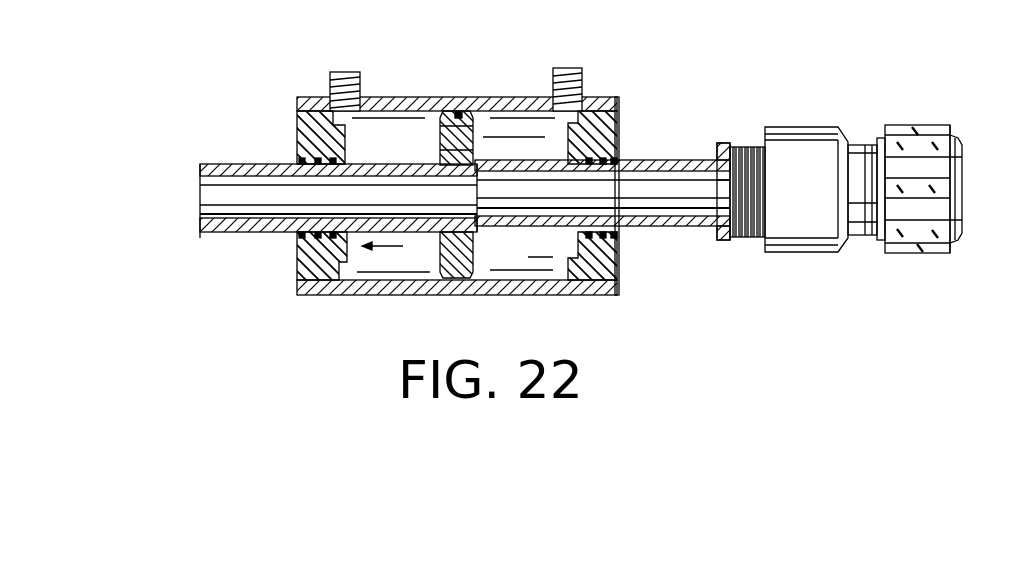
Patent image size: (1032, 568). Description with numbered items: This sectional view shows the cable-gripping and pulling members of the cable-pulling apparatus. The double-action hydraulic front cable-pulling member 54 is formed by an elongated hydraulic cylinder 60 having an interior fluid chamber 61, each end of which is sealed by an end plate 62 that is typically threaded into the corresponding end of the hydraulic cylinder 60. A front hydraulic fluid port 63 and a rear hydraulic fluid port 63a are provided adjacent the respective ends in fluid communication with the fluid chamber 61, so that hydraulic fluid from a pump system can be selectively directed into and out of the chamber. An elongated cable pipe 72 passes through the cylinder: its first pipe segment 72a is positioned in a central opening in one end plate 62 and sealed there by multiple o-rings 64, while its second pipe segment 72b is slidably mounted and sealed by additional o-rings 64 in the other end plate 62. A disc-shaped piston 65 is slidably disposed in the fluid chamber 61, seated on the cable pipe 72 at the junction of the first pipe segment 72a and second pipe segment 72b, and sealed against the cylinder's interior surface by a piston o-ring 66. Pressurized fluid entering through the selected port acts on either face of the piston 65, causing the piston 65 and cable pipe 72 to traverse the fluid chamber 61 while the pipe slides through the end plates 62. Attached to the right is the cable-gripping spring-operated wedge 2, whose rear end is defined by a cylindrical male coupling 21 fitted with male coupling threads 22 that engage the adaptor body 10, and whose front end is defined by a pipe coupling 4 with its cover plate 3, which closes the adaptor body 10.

The front cable-pulling member 54 is at (300, 82).
The hydraulic cylinder 60 is at (416, 95).
The fluid chamber 61 is at (517, 256).
The end plate 62 is at (298, 124).
The front hydraulic fluid port 63 is at (362, 82).
The rear hydraulic fluid port 63a is at (583, 82).
The o-rings 64 is at (331, 161).
The piston 65 is at (452, 132).
The piston o-ring 66 is at (455, 111).
The cable pipe 72 is at (197, 240).
The first pipe segment 72a is at (270, 234).
The second pipe segment 72b is at (674, 230).
The male coupling 21 is at (746, 244).
The male coupling threads 22 is at (745, 147).
The spring-operated wedge 2 is at (826, 260).
The adaptor body 10 is at (788, 119).
The cover plate 3 is at (965, 200).
The pipe coupling 4 is at (962, 138).